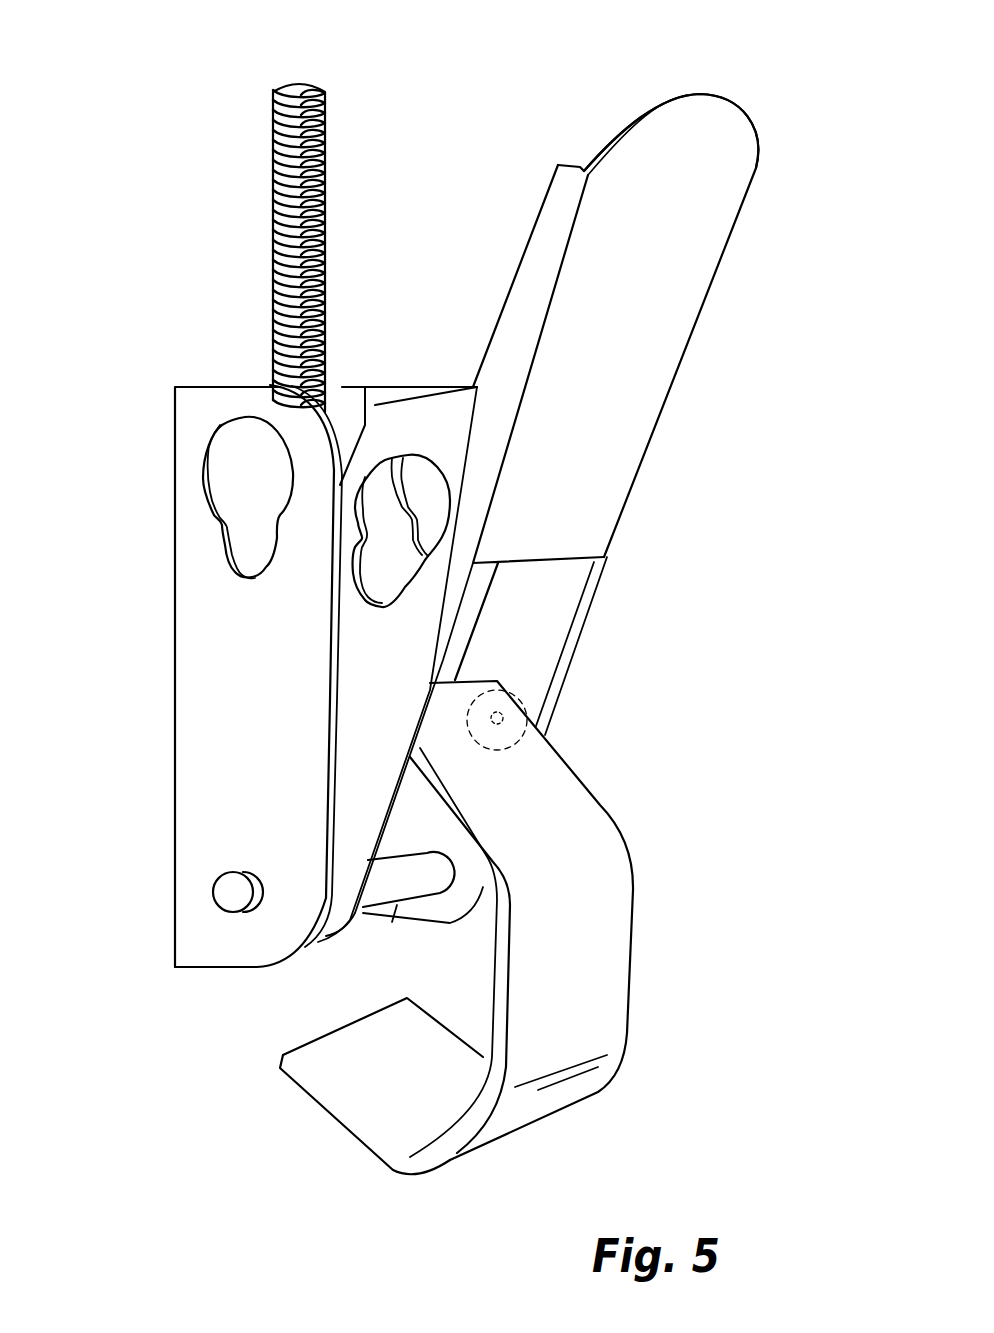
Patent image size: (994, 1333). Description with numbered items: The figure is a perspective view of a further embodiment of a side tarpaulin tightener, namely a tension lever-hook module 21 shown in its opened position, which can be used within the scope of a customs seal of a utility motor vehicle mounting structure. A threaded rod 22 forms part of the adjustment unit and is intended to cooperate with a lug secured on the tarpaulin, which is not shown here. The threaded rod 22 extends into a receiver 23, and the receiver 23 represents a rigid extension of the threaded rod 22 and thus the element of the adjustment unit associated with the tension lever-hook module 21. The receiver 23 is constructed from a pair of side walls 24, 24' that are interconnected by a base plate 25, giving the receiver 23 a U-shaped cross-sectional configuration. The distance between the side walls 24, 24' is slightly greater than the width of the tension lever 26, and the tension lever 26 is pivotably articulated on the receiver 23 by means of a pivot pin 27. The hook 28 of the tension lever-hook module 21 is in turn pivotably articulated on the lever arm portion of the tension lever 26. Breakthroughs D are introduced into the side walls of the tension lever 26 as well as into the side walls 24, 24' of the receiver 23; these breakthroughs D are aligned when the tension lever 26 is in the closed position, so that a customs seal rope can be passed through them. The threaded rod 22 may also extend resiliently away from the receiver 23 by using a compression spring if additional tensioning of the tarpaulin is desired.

The tension lever-hook module 21 is at (833, 112).
The threaded rod 22 is at (270, 244).
The receiver 23 is at (168, 450).
The side wall 24 is at (216, 666).
The side wall 24' is at (408, 372).
The base plate 25 is at (343, 406).
The tension lever 26 is at (694, 462).
The pivot pin 27 is at (230, 911).
The hook 28 is at (603, 967).
The breakthroughs D is at (388, 533).